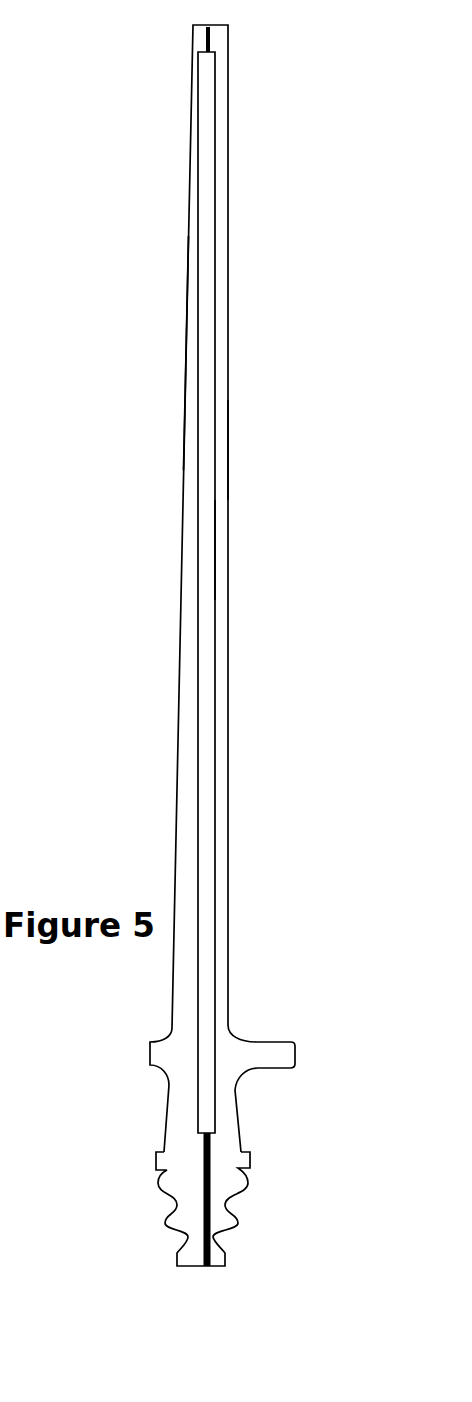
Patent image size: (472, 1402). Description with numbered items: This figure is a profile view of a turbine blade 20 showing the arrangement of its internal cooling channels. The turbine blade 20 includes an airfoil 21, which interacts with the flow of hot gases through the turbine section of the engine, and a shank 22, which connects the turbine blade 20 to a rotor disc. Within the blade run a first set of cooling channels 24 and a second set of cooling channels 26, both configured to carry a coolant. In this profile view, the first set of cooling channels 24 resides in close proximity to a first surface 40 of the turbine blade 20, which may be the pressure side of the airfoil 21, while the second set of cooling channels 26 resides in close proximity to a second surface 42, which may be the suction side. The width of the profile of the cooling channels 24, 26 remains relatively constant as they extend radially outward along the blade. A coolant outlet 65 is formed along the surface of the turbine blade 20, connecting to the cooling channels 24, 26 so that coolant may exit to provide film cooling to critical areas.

The turbine blade 20 is at (277, 335).
The airfoil 21 is at (190, 262).
The shank 22 is at (160, 1172).
The first set of cooling channels 24 is at (198, 385).
The second set of cooling channels 26 is at (216, 542).
The first surface 40 is at (186, 455).
The second surface 42 is at (228, 450).
The coolant outlet 65 is at (210, 39).